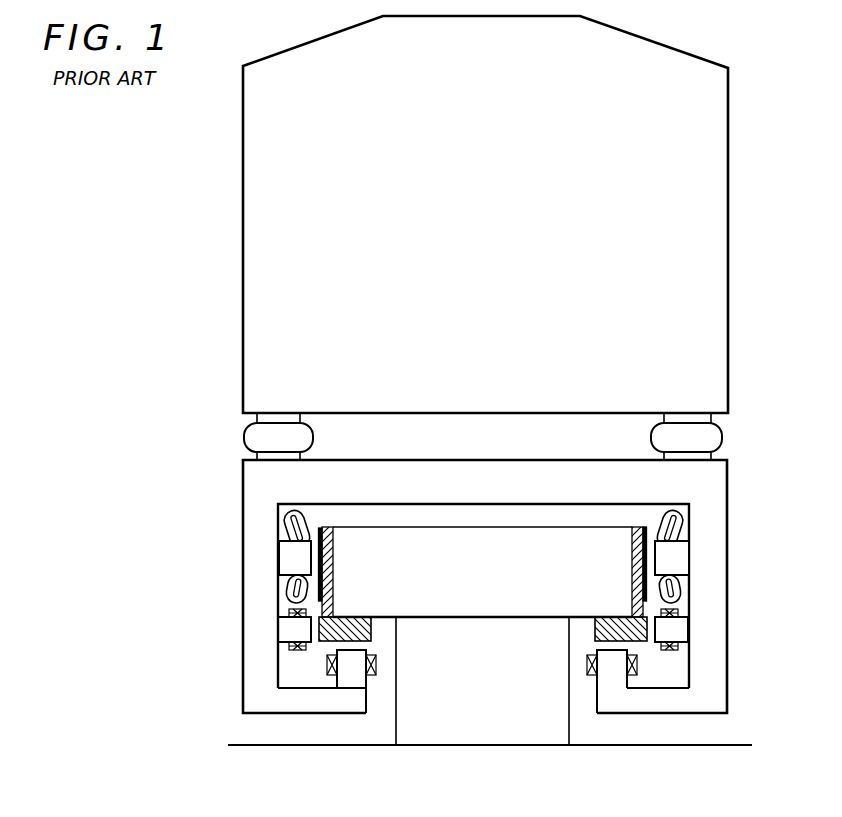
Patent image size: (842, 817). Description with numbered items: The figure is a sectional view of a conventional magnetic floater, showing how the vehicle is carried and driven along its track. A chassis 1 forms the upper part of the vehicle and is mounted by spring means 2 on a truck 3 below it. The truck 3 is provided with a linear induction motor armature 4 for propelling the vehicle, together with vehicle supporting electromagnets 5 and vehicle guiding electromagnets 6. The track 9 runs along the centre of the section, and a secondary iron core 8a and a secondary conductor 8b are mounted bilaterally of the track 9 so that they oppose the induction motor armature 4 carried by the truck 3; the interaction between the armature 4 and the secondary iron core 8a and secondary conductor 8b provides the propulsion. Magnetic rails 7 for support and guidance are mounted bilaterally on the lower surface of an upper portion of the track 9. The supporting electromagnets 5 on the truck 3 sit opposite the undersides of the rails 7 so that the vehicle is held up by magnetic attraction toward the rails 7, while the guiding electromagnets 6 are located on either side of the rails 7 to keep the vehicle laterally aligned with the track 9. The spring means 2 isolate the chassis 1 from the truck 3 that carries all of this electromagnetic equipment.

The chassis 1 is at (717, 215).
The spring means 2 is at (722, 430).
The truck 3 is at (727, 487).
The linear induction motor armature 4 is at (680, 556).
The vehicle supporting electromagnets 5 is at (615, 680).
The vehicle guiding electromagnets 6 is at (683, 627).
The magnetic rails 7 is at (595, 630).
The secondary iron core 8a is at (632, 579).
The secondary conductor 8b is at (645, 596).
The track 9 is at (440, 735).